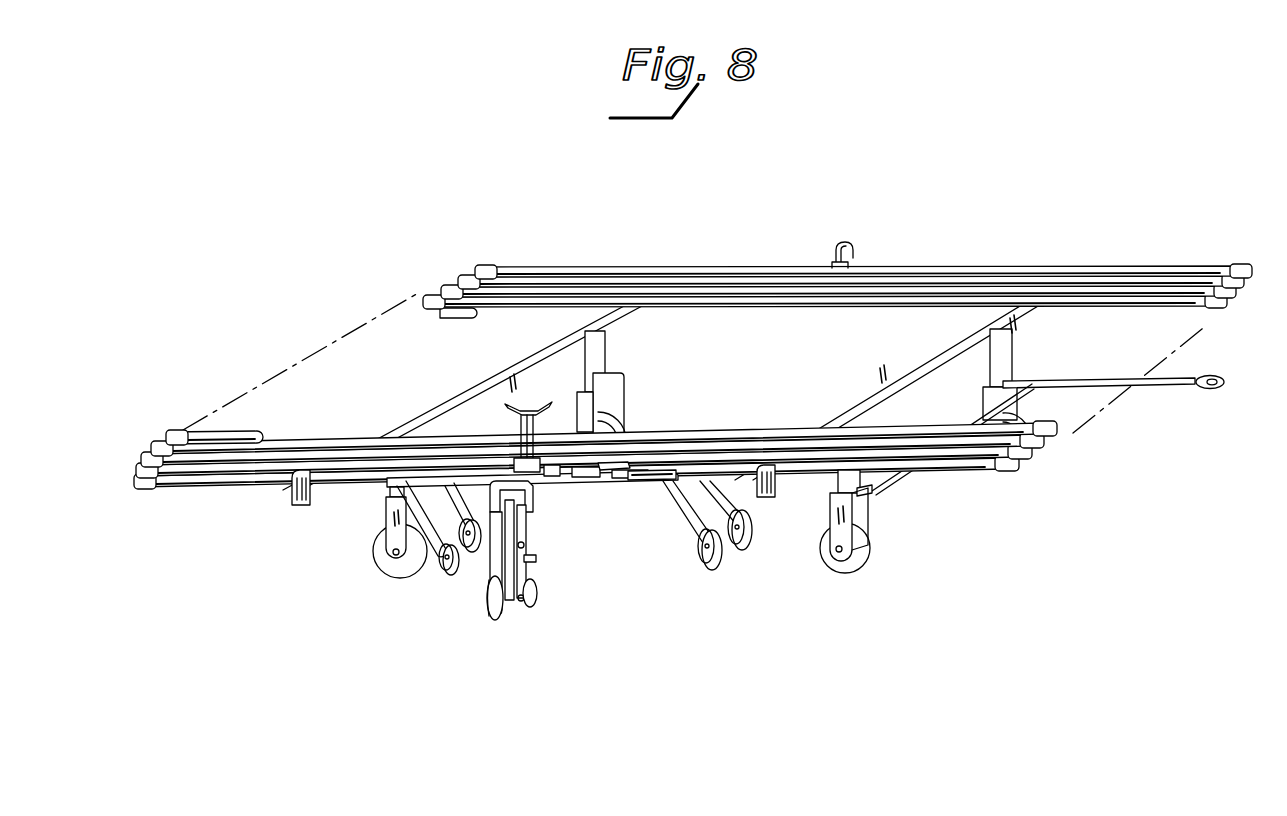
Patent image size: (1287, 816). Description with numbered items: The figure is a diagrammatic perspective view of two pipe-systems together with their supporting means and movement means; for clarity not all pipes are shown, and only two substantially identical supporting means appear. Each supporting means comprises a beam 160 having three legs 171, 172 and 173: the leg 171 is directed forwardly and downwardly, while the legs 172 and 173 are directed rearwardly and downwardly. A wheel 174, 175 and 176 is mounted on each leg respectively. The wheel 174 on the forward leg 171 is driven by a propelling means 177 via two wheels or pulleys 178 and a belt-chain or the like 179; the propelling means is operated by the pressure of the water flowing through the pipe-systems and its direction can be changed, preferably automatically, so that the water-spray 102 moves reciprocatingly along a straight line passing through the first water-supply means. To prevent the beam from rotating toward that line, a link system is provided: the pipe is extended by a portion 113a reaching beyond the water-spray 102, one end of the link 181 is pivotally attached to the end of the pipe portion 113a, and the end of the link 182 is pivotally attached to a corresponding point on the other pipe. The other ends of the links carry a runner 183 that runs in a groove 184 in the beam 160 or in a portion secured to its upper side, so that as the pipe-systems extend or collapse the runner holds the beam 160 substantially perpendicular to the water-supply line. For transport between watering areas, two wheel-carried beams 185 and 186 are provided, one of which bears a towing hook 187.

The water-spray 102 is at (504, 409).
The pipe portion 113a is at (556, 474).
The beam 160 is at (661, 481).
The leg 171 is at (492, 566).
The leg 172 is at (418, 509).
The leg 173 is at (696, 523).
The wheel 174 is at (490, 615).
The wheel 175 is at (437, 570).
The wheel 176 is at (716, 559).
The propelling means 177 is at (521, 538).
The wheels or pulleys 178 is at (524, 540).
The belt-chain 179 is at (527, 574).
The link 181 is at (596, 477).
The link 182 is at (613, 463).
The runner 183 is at (631, 478).
The groove 184 is at (654, 477).
The beam 185 is at (638, 296).
The beam 186 is at (949, 346).
The towing hook 187 is at (1193, 380).